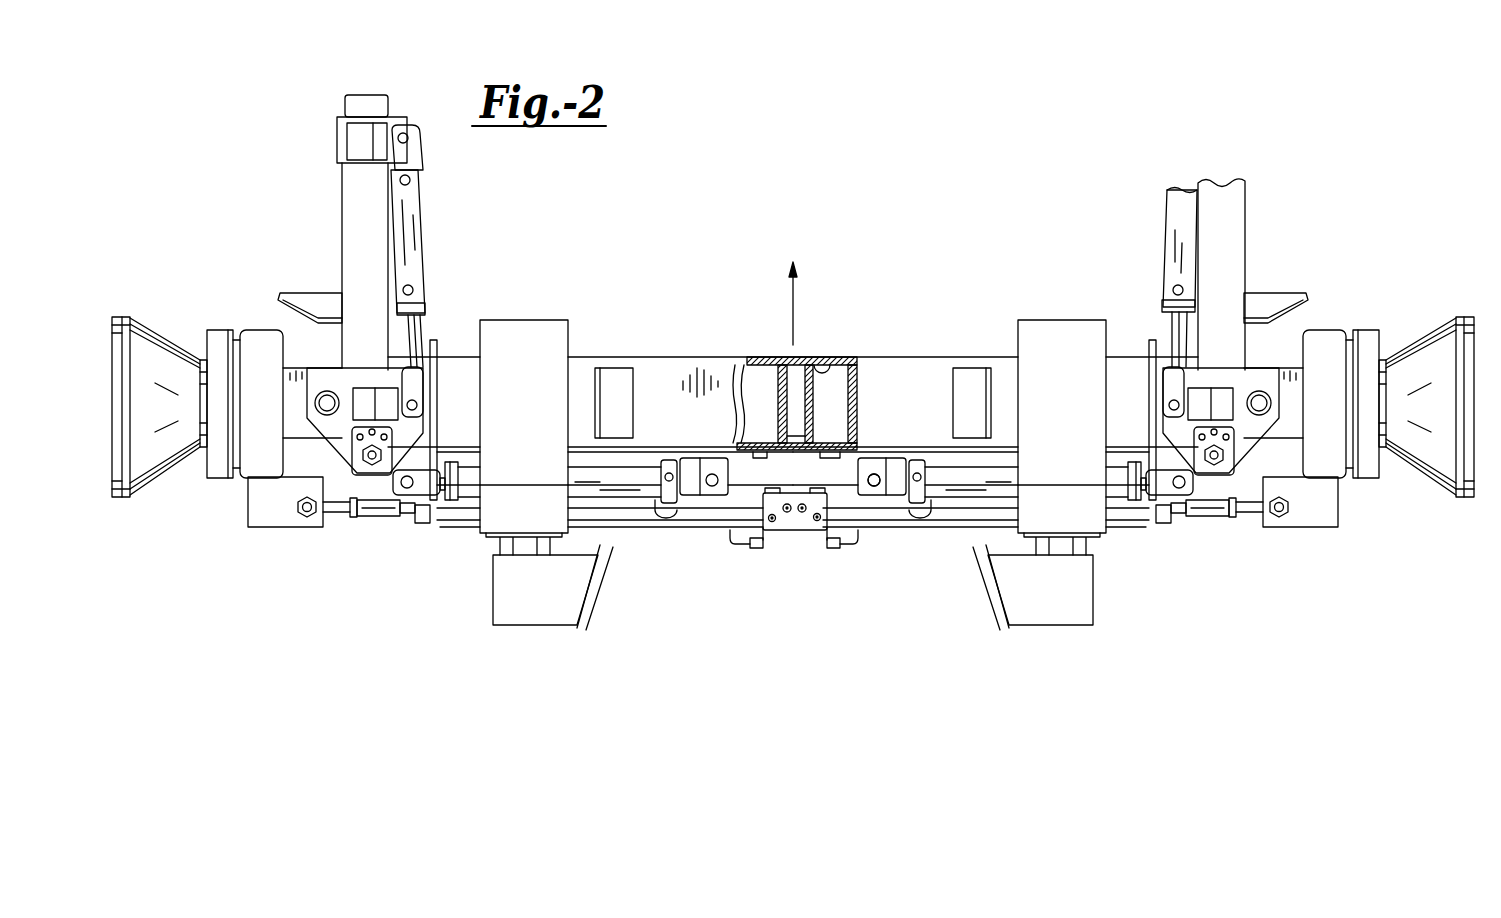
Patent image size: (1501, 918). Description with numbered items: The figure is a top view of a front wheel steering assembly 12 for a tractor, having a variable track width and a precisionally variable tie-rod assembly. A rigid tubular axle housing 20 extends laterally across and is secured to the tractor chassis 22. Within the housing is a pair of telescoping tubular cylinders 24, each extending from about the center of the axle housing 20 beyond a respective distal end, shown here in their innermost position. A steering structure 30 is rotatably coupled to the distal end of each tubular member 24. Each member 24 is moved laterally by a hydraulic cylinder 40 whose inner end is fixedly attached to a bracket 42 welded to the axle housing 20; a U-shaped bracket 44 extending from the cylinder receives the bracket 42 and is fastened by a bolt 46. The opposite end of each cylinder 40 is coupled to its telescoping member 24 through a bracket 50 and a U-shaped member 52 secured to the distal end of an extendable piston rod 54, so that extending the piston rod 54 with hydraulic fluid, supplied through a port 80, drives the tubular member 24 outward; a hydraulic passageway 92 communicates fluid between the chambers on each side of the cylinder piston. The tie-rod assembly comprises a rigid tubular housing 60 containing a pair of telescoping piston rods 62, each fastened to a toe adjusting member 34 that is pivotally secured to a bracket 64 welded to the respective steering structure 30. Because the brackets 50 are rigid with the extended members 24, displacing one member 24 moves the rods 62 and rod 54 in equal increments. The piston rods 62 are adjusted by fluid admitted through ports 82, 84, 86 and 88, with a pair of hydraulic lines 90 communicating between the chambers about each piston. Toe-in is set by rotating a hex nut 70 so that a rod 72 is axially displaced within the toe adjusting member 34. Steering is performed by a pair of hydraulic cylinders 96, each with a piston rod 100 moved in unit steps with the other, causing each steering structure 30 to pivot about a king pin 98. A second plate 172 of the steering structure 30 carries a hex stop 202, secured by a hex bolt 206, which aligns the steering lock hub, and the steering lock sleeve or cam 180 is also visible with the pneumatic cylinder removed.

The front wheel steering assembly 12 is at (1010, 220).
The axle housing 20 is at (905, 357).
The tractor chassis 22 is at (570, 325).
The telescoping tubular cylinder 24 is at (434, 345).
The steering structure 30 is at (118, 286).
The toe adjusting member 34 is at (1218, 515).
The hydraulic cylinder 40 is at (643, 463).
The bracket 42 is at (725, 455).
The U-shaped bracket 44 is at (643, 514).
The bolt 46 is at (875, 487).
The bracket 50 is at (352, 472).
The U-shaped member 52 is at (425, 518).
The piston rod 54 is at (441, 468).
The tubular housing 60 is at (737, 507).
The piston rod 62 is at (406, 518).
The bracket 64 is at (274, 528).
The hex nut 70 is at (355, 516).
The rod 72 is at (340, 517).
The port 80 is at (611, 507).
The port 82 is at (767, 548).
The port 84 is at (787, 532).
The port 86 is at (801, 530).
The port 88 is at (814, 548).
The hydraulic line 90 is at (987, 534).
The hydraulic passageway 92 is at (612, 552).
The hydraulic cylinder 96 is at (423, 203).
The king pin 98 is at (1278, 405).
The piston rod 100 is at (1168, 340).
The second plate 172 is at (1278, 470).
The steering lock sleeve 180 is at (1245, 462).
The hex stop 202 is at (1203, 420).
The hex bolt 206 is at (1240, 438).